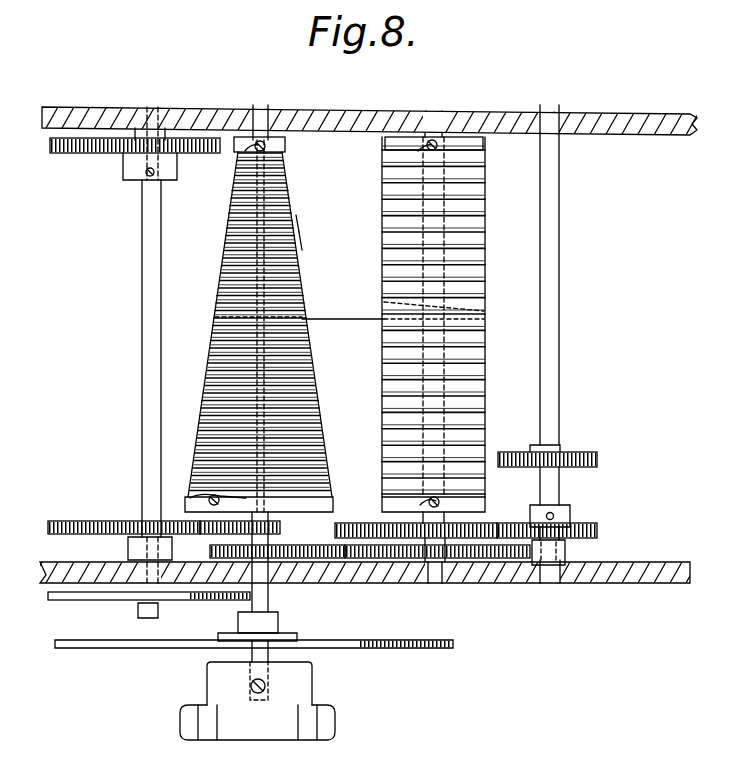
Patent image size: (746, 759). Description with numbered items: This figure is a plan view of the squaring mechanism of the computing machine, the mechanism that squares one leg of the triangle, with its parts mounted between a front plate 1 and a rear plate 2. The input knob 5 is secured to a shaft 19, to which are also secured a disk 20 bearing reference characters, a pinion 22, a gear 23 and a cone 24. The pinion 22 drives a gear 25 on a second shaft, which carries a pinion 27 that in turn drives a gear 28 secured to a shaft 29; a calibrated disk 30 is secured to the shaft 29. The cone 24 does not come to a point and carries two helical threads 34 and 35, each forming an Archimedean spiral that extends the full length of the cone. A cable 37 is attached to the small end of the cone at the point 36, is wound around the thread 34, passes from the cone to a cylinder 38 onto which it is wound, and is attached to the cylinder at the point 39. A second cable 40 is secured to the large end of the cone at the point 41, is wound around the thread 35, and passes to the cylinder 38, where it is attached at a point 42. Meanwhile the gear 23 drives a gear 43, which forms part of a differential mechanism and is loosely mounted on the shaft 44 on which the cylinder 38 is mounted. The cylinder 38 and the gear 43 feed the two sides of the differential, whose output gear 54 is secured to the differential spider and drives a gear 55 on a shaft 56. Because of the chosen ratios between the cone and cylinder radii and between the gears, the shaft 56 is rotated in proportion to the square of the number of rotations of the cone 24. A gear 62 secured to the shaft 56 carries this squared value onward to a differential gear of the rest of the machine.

The front plate 1 is at (40, 568).
The rear plate 2 is at (94, 108).
The input knob 5 is at (334, 724).
The shaft 19 is at (268, 594).
The disk 20 is at (348, 648).
The pinion 22 is at (282, 531).
The gear 23 is at (210, 551).
The cone 24 is at (312, 384).
The gear 25 is at (100, 521).
The pinion 27 is at (174, 142).
The gear 28 is at (105, 154).
The shaft 29 is at (142, 379).
The disk 30 is at (94, 602).
The helical thread 34 is at (300, 223).
The helical thread 35 is at (302, 240).
The point 36 is at (285, 153).
The cable 37 is at (360, 318).
The cylinder 38 is at (478, 256).
The point 39 is at (440, 502).
The second cable 40 is at (366, 322).
The point 41 is at (188, 500).
The point 42 is at (484, 152).
The gear 43 is at (384, 560).
The shaft 44 is at (436, 574).
The output gear 54 is at (358, 523).
The gear 55 is at (598, 530).
The shaft 56 is at (558, 484).
The gear 62 is at (597, 463).